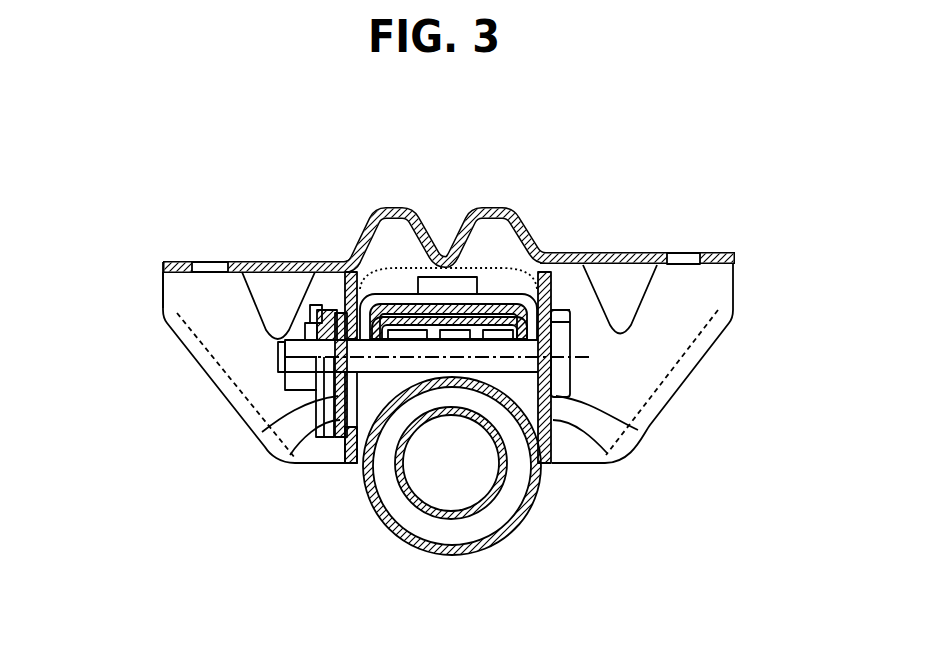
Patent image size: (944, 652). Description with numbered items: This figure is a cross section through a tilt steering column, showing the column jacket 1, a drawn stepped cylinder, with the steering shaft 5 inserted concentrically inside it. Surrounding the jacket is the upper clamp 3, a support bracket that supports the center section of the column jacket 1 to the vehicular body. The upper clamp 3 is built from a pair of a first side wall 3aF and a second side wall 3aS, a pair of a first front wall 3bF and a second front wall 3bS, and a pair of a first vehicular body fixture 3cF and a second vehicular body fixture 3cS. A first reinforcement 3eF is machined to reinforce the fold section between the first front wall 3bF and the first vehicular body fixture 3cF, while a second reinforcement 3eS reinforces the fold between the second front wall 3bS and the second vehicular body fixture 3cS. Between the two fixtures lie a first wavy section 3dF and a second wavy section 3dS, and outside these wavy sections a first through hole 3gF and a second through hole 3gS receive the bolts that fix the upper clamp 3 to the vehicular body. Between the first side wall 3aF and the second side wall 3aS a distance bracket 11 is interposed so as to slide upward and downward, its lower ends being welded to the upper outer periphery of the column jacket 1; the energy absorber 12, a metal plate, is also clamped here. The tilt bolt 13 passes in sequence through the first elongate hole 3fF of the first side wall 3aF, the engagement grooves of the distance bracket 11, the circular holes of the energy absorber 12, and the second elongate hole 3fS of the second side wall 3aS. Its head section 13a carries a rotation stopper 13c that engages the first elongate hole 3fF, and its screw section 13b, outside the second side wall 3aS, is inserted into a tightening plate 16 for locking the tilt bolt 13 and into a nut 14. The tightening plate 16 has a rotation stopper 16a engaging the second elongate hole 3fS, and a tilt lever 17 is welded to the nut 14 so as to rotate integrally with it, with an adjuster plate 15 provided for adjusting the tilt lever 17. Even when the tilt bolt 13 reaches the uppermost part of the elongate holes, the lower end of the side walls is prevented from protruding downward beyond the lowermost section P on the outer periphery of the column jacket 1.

The column jacket 1 is at (486, 547).
The upper clamp 3 is at (668, 160).
The second side wall 3aS is at (337, 466).
The first side wall 3aF is at (565, 466).
The second front wall 3bS is at (258, 386).
The first front wall 3bF is at (637, 370).
The second vehicular body fixture 3cS is at (292, 268).
The first vehicular body fixture 3cF is at (612, 254).
The second wavy section 3dS is at (390, 209).
The first wavy section 3dF is at (485, 209).
The second reinforcement 3eS is at (164, 266).
The first reinforcement 3eF is at (633, 272).
The second elongate hole 3fS is at (335, 432).
The first elongate hole 3fF is at (640, 430).
The second through hole 3gS is at (213, 261).
The first through hole 3gF is at (698, 252).
The steering shaft 5 is at (500, 492).
The distance bracket 11 is at (400, 304).
The energy absorber 12 is at (493, 318).
The tilt bolt 13 is at (366, 482).
The head section 13a is at (572, 333).
The screw section 13b is at (283, 346).
The rotation stopper 13c is at (565, 310).
The nut 14 is at (305, 318).
The adjuster plate 15 is at (310, 320).
The tightening plate 16 is at (312, 392).
The rotation stopper 16a is at (318, 430).
The tilt lever 17 is at (325, 305).
The lowermost section P is at (447, 572).